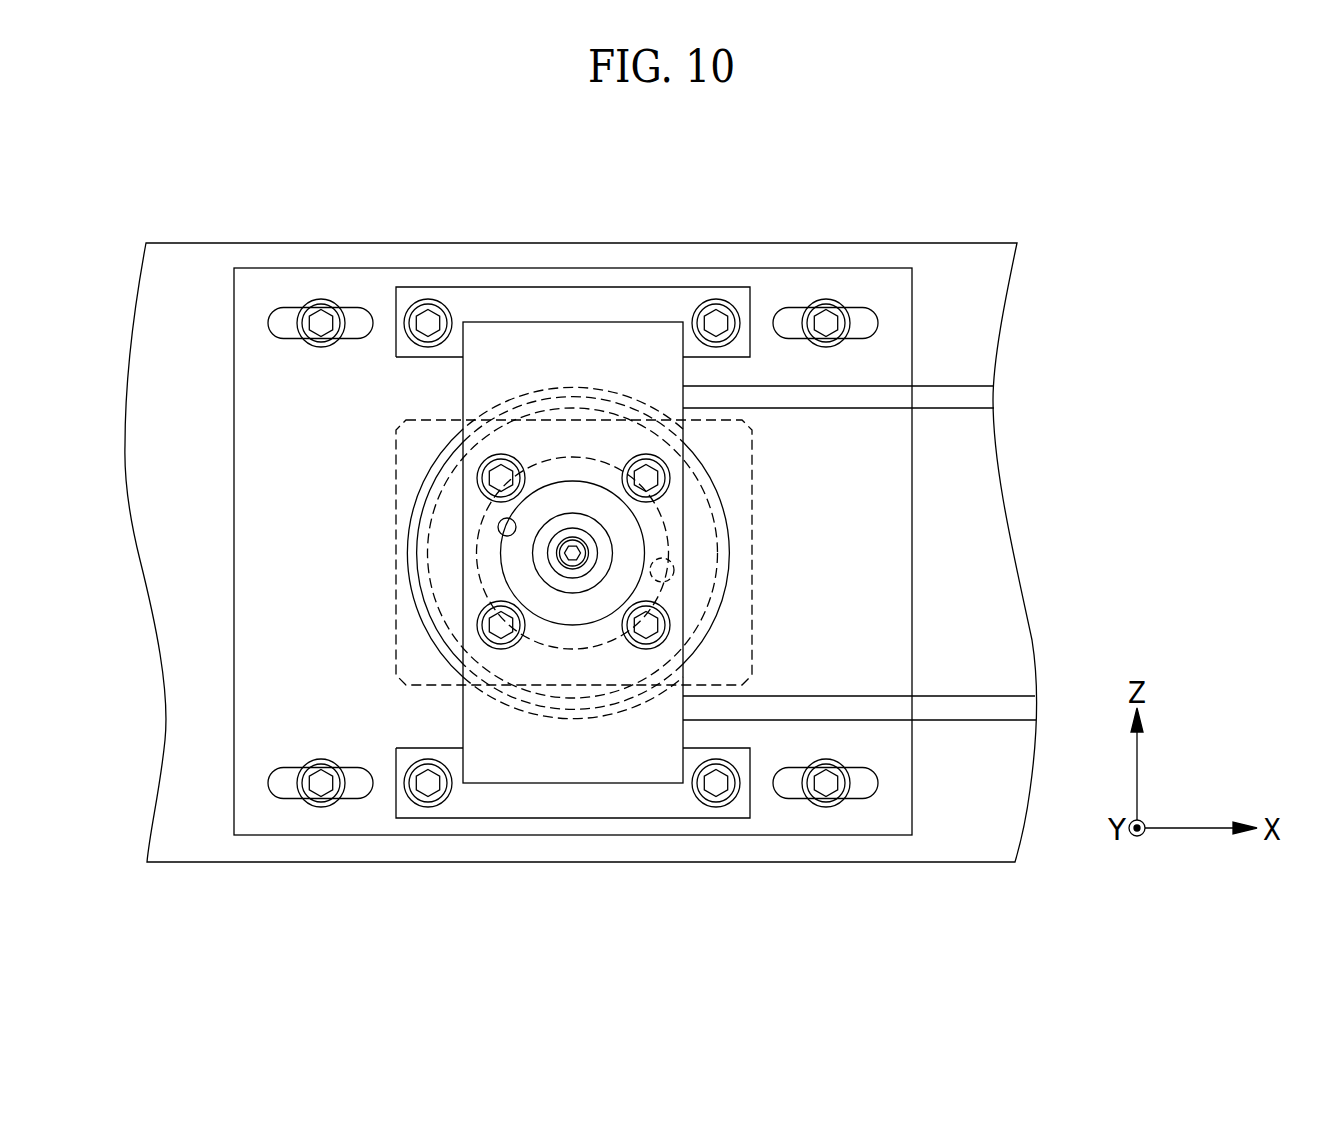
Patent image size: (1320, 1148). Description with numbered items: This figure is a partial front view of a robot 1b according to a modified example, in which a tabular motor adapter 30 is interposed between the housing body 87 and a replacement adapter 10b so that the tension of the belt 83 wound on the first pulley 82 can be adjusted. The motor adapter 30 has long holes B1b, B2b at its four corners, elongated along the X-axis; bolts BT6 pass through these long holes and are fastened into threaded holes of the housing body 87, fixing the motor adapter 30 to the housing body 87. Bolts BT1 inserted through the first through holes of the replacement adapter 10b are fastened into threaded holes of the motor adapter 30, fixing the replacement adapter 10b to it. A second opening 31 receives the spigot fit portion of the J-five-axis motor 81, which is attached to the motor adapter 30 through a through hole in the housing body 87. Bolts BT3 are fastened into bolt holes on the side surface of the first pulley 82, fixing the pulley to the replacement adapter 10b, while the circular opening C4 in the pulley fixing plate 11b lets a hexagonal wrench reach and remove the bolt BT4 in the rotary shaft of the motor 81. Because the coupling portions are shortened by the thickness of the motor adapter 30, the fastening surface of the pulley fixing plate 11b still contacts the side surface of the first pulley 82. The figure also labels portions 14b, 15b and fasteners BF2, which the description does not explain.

The robot 1b is at (1050, 175).
The housing body 87 is at (929, 243).
The motor adapter 30 is at (563, 268).
The belt 83 is at (972, 396).
The first bracket 14b is at (532, 307).
The second bracket 15b is at (522, 818).
The replacement adapter 10b is at (620, 270).
The pulley fixing plate 11b is at (683, 428).
The first pulley 82 is at (729, 540).
The J5-axis motor 81 is at (753, 497).
The second opening 31 is at (667, 565).
The circular opening C4 is at (507, 530).
The bolt BT4 is at (556, 553).
The bolt BT3 is at (497, 480).
The bolts BT6 is at (321, 299).
The long hole B1b is at (876, 331).
The long hole B2b is at (877, 790).
The bolts BT1 is at (428, 299).
The bolts BF2 is at (428, 808).